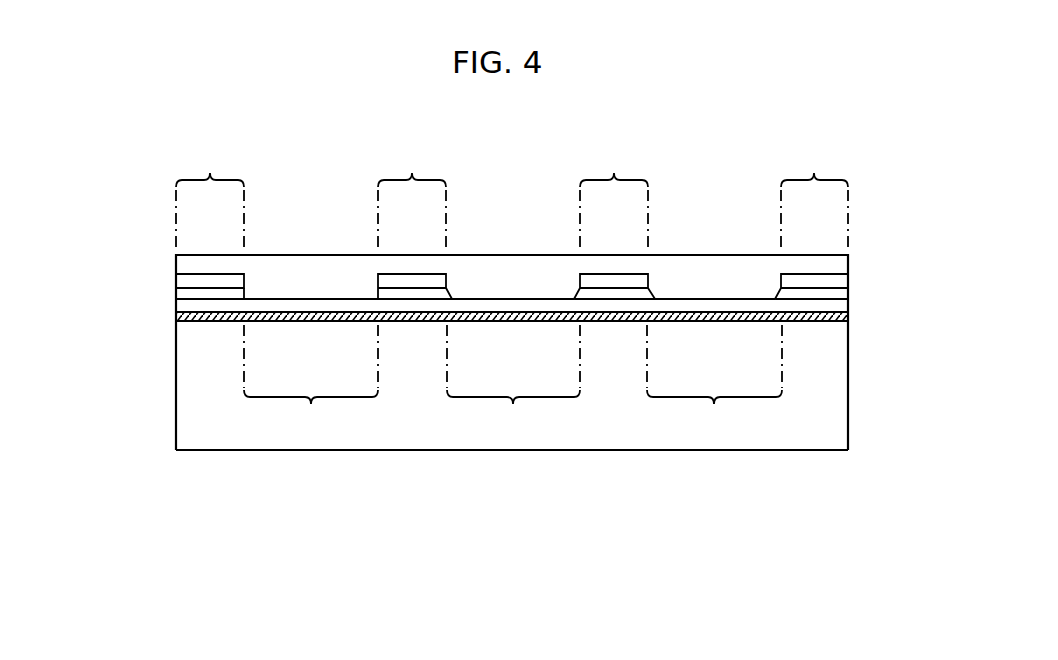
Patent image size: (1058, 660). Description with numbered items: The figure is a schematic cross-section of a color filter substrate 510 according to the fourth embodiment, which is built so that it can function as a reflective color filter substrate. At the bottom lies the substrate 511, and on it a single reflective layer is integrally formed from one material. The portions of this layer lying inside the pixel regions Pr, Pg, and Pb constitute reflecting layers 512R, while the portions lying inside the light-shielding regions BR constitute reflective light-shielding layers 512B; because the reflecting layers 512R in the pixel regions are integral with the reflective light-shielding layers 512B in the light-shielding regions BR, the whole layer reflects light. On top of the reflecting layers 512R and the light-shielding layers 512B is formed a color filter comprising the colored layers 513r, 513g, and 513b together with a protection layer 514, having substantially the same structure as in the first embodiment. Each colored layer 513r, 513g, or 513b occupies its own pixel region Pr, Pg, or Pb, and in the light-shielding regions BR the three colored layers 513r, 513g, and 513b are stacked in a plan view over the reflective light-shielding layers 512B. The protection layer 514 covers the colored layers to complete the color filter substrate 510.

The color filter substrate 510 is at (545, 130).
The substrate 511 is at (455, 450).
The reflecting layer 512R is at (304, 322).
The reflective light-shielding layer 512B is at (200, 322).
The colored layer 513r is at (317, 300).
The colored layer 513g is at (176, 282).
The colored layer 513b is at (176, 293).
The protection layer 514 is at (842, 267).
The light-shielding region BR is at (512, 194).
The pixel region Pr is at (311, 381).
The pixel region Pg is at (513, 381).
The pixel region Pb is at (714, 381).